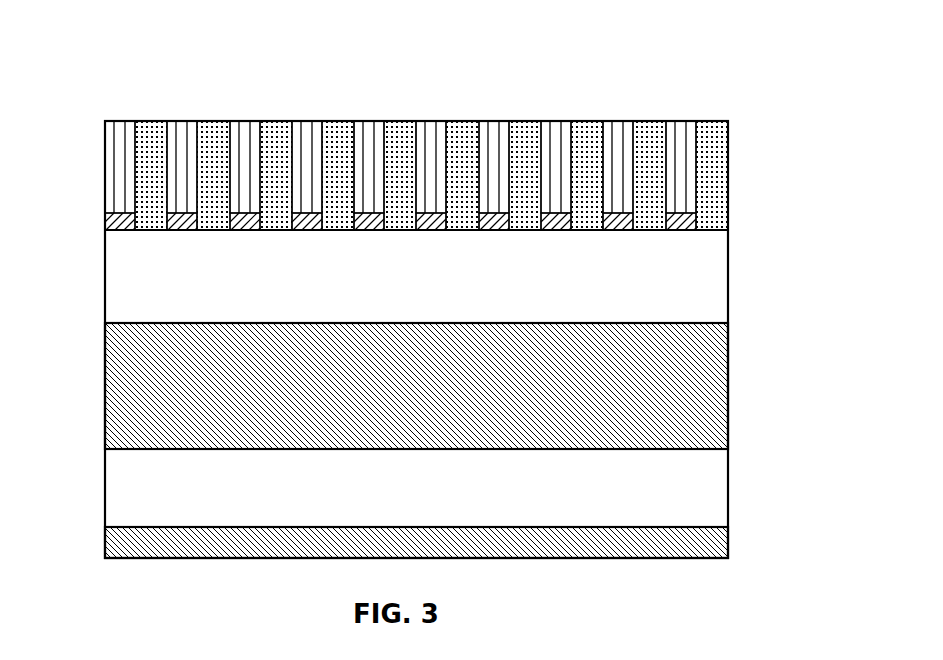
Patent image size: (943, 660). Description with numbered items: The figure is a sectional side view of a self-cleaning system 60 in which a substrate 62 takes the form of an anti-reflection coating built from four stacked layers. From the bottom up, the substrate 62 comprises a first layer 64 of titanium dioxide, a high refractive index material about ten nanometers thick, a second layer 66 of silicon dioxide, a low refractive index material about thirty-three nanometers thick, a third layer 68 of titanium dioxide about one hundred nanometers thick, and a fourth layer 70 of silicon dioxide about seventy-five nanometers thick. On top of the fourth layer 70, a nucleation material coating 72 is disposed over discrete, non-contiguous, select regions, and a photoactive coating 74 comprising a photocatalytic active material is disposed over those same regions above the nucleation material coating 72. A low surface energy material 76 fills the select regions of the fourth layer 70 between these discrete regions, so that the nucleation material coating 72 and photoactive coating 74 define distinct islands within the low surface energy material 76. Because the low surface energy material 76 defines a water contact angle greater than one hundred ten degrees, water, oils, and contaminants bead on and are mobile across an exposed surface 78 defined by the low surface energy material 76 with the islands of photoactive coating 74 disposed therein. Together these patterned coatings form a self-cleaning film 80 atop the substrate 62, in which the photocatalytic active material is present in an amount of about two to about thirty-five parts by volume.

The self-cleaning system 60 is at (116, 83).
The substrate 62 is at (431, 394).
The first layer 64 is at (730, 550).
The second layer 66 is at (412, 506).
The third layer 68 is at (412, 396).
The fourth layer 70 is at (412, 286).
The nucleation material coating 72 is at (443, 212).
The photoactive coating 74 is at (495, 143).
The low surface energy material 76 is at (533, 142).
The exposed surface 78 is at (267, 121).
The self-cleaning film 80 is at (430, 152).